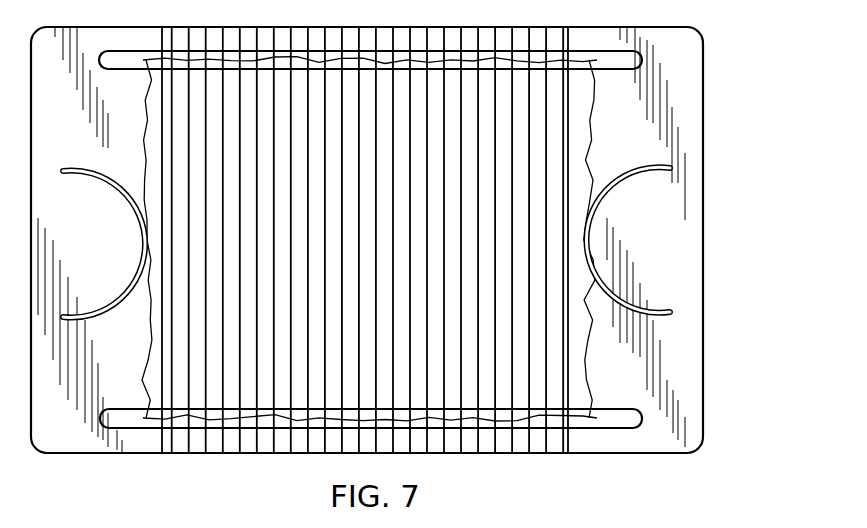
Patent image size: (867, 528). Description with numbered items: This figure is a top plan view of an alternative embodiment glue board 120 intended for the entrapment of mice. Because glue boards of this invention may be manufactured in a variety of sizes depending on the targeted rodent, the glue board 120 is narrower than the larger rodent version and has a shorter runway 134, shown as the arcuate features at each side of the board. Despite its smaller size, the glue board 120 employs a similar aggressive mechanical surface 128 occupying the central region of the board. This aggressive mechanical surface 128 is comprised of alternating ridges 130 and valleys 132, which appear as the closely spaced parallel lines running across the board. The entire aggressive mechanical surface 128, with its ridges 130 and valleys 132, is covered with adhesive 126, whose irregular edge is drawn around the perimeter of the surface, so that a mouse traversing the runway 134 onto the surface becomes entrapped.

The glue board 120 is at (762, 106).
The adhesive 126 is at (589, 103).
The aggressive mechanical surface 128 is at (560, 357).
The ridges 130 is at (537, 395).
The valleys 132 is at (518, 397).
The runway 134 is at (588, 165).